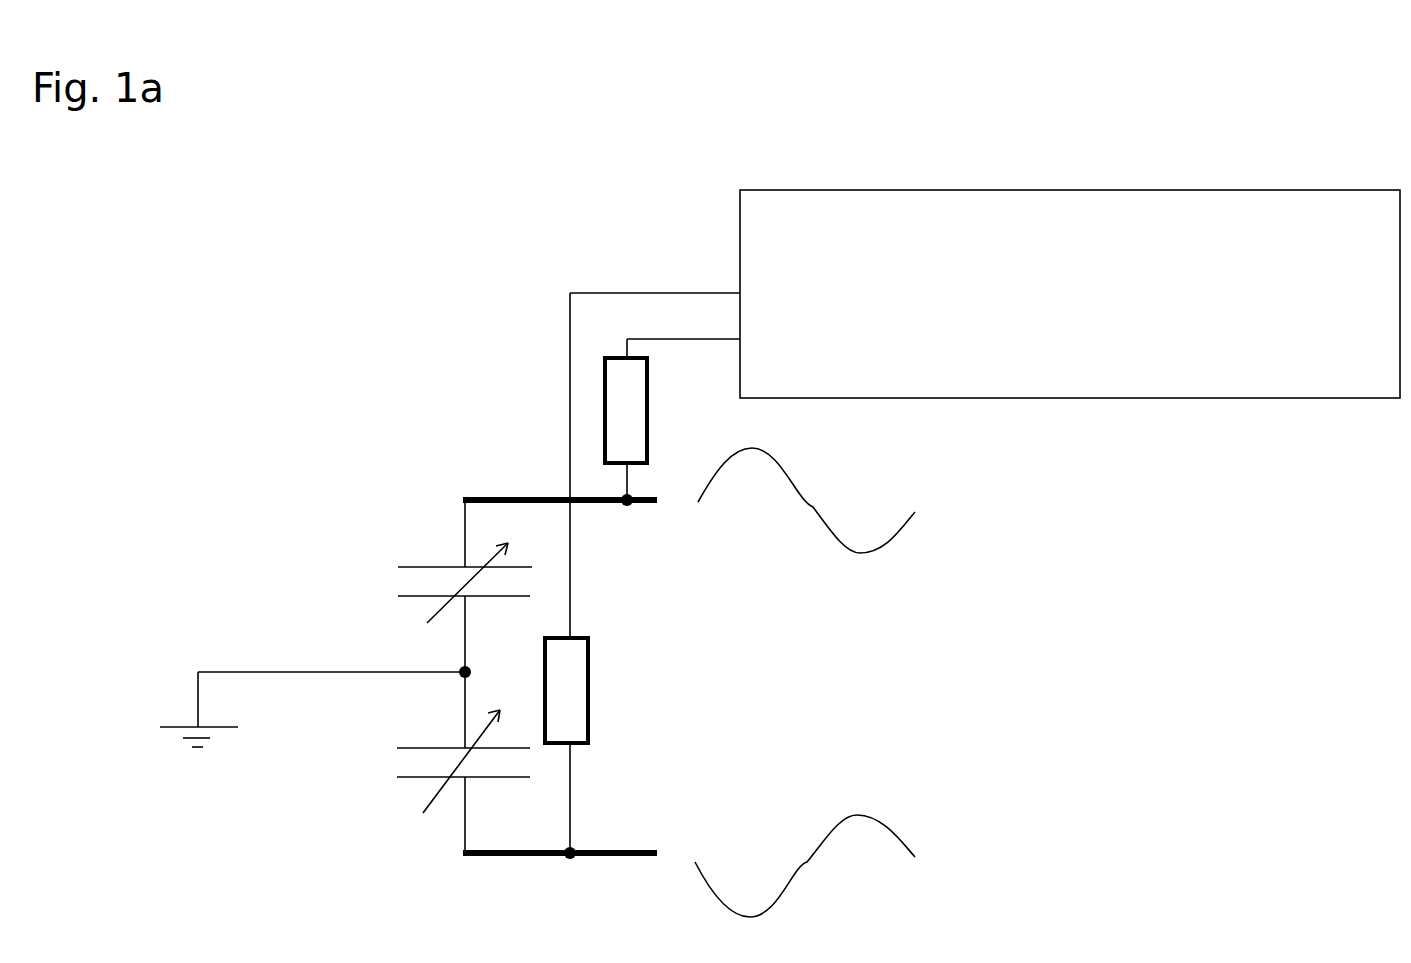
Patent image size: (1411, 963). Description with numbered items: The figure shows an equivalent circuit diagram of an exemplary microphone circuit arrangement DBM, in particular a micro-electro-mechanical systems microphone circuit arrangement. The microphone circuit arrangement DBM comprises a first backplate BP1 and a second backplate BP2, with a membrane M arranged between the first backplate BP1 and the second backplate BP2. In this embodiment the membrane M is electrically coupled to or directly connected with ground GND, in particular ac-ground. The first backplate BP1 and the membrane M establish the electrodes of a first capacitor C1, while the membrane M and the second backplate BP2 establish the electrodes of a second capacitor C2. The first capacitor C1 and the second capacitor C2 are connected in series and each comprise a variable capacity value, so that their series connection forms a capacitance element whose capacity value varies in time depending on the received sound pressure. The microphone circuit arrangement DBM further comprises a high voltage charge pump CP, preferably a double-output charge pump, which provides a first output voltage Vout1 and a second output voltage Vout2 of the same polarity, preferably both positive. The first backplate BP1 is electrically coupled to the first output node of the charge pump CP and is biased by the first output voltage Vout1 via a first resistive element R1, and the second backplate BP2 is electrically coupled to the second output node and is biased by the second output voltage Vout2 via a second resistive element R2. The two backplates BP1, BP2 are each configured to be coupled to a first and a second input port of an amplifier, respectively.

The high voltage charge pump CP is at (942, 189).
The microphone circuit arrangement DBM is at (363, 334).
The first backplate BP1 is at (488, 496).
The second backplate BP2 is at (506, 857).
The first capacitor C1 is at (402, 573).
The second capacitor C2 is at (398, 763).
The first resistive element R1 is at (648, 446).
The second resistive element R2 is at (590, 690).
The membrane M is at (458, 673).
The ground GND is at (175, 723).
The first output voltage Vout1 is at (705, 292).
The second output voltage Vout2 is at (733, 341).